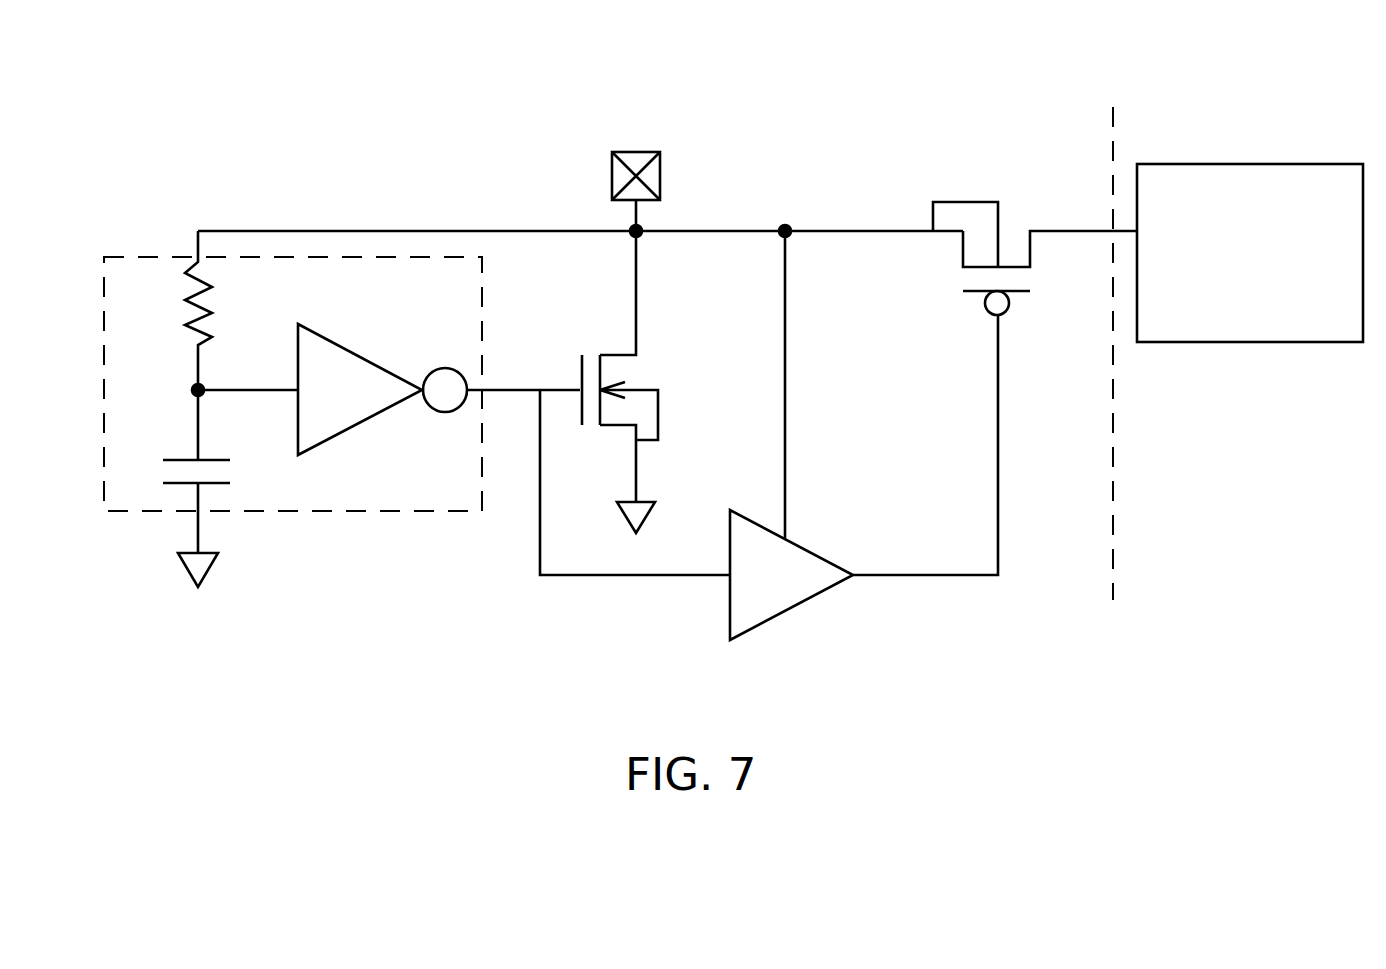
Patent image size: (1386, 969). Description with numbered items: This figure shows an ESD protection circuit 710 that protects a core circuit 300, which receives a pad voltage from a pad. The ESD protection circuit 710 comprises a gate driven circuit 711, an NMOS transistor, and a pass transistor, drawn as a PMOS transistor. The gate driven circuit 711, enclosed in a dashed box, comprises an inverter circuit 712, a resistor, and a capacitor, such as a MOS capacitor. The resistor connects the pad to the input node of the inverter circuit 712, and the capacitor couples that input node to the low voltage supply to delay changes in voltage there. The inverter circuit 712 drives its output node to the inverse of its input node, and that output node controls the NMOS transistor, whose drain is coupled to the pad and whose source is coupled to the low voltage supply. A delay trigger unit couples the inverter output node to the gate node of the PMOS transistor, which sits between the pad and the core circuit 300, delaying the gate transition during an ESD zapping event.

The ESD protection circuit 710 is at (307, 137).
The gate driven circuit 711 is at (368, 512).
The inverter circuit 712 is at (365, 422).
The core circuit 300 is at (1222, 273).